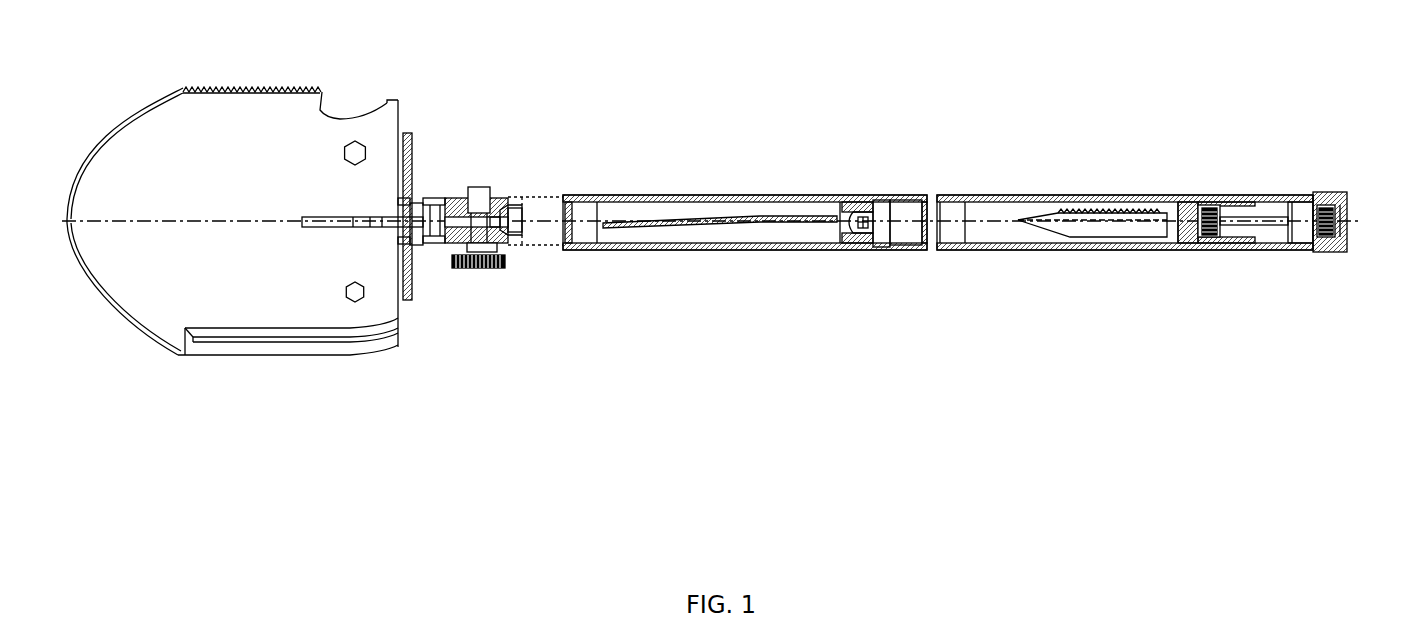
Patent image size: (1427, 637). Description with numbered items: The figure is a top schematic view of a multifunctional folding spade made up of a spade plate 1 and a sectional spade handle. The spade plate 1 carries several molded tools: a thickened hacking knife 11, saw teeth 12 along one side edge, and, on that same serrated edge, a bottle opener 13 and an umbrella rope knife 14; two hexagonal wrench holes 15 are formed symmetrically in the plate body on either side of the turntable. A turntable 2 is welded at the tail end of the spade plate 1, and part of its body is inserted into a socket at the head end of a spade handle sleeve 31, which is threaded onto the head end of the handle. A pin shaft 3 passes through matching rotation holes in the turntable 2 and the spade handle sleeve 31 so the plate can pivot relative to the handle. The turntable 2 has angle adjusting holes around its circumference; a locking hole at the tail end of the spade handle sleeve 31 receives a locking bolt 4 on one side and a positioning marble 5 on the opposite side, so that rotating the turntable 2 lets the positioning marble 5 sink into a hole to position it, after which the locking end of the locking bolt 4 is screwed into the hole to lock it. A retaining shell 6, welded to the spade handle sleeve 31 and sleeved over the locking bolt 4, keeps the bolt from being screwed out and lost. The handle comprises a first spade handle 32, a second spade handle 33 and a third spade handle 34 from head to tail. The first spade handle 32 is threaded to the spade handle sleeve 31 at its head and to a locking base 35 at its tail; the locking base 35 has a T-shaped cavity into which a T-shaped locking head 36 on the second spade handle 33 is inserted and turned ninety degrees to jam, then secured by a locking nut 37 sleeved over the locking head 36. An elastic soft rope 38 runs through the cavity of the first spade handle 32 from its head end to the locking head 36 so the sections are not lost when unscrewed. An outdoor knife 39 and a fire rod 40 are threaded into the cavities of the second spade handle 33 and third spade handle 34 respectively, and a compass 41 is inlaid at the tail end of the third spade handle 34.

The spade plate 1 is at (142, 282).
The thickened hacking knife 11 is at (197, 340).
The saw teeth 12 is at (245, 88).
The bottle opener 13 is at (327, 100).
The umbrella rope knife 14 is at (334, 110).
The hexagonal wrench hole 15 is at (353, 295).
The turntable 2 is at (348, 223).
The pin shaft 3 is at (438, 243).
The locking bolt 4 is at (458, 267).
The positioning marble 5 is at (500, 243).
The retaining shell 6 is at (488, 263).
The spade handle sleeve 31 is at (547, 233).
The first spade handle 32 is at (633, 245).
The second spade handle 33 is at (980, 250).
The third spade handle 34 is at (1218, 248).
The locking base 35 is at (853, 247).
The locking head 36 is at (878, 243).
The locking nut 37 is at (908, 245).
The elastic soft rope 38 is at (770, 218).
The outdoor knife 39 is at (1123, 225).
The fire rod 40 is at (1257, 223).
The compass 41 is at (1352, 243).